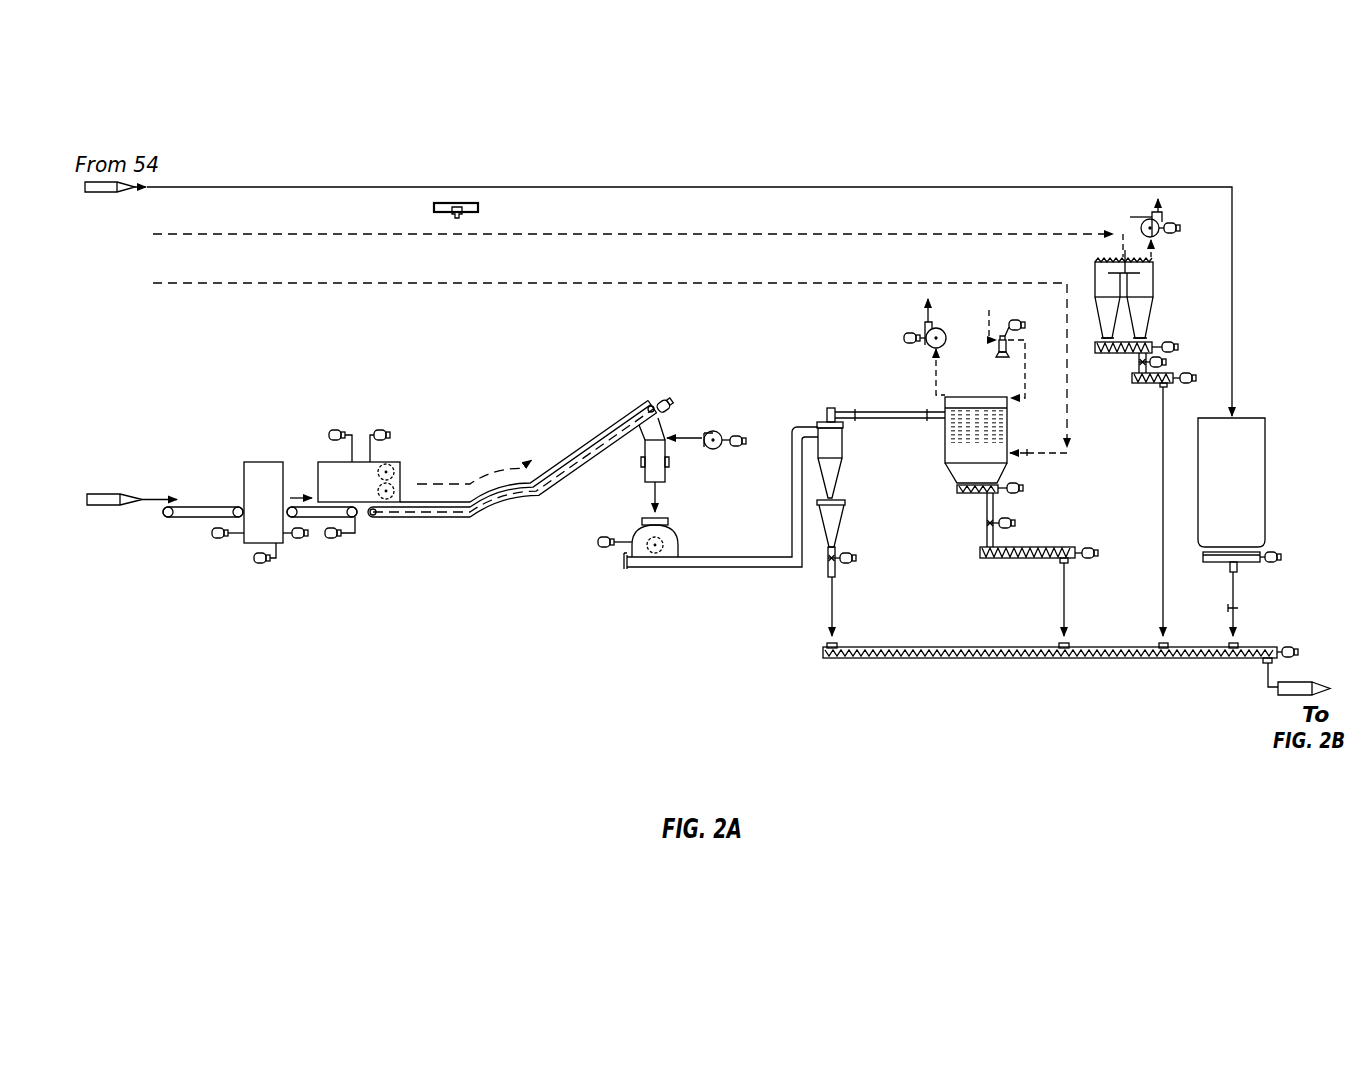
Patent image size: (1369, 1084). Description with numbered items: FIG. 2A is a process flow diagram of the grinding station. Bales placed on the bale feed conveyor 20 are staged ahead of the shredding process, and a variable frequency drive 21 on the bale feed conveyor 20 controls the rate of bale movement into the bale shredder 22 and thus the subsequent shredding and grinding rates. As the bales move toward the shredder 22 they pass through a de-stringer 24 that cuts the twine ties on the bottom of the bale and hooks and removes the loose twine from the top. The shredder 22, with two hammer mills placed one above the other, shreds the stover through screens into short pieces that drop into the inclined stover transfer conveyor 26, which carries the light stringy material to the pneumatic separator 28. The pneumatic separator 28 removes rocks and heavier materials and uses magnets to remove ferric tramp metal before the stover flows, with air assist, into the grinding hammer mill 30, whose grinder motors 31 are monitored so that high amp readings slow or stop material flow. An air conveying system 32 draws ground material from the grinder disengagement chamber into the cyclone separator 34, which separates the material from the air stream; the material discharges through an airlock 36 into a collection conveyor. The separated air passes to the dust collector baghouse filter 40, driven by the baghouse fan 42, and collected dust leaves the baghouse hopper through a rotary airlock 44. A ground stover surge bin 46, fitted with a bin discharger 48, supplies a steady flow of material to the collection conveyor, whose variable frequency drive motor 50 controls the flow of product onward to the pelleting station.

The bale feed conveyor 20 is at (205, 507).
The variable frequency drive 21 is at (341, 540).
The bale shredder 22 is at (325, 462).
The de-stringer 24 is at (257, 462).
The stover transfer conveyor 26 is at (613, 418).
The pneumatic separator 28 is at (656, 428).
The grinding hammer mill 30 is at (676, 532).
The grinder motors 31 is at (598, 542).
The air conveying system 32 is at (707, 567).
The cyclone separator 34 is at (825, 422).
The airlock 36 is at (828, 557).
The dust collector baghouse filter 40 is at (1006, 425).
The baghouse fan 42 is at (926, 346).
The rotary airlock 44 is at (987, 526).
The ground stover surge bin 46 is at (1258, 515).
The bin discharger 48 is at (1220, 562).
The variable frequency drive motor 50 is at (1298, 652).